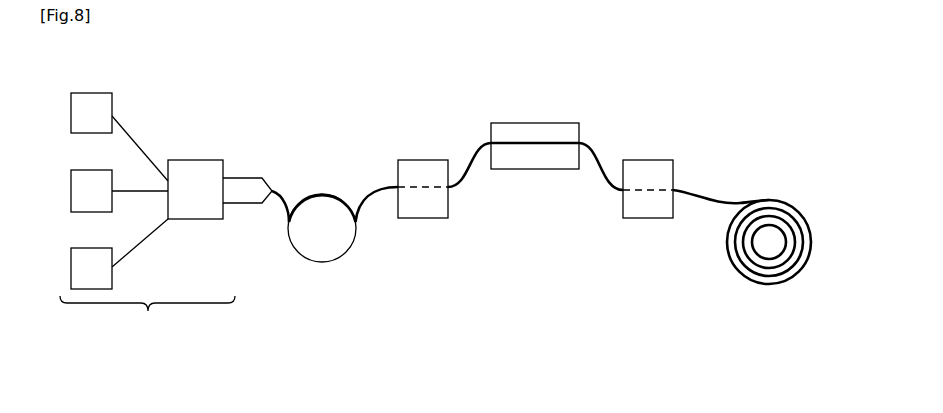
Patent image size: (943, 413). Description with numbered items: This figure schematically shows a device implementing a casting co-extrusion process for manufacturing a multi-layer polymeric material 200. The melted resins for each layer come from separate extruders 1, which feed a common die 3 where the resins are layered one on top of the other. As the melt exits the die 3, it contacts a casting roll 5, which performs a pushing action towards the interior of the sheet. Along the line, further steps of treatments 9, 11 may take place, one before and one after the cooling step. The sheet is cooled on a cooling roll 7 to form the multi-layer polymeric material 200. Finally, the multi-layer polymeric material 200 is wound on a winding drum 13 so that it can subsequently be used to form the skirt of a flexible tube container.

The extruders 1 is at (147, 217).
The die 3 is at (250, 190).
The casting roll 5 is at (325, 240).
The cooling roll 7 is at (533, 128).
The treatment 9 is at (412, 170).
The treatment 11 is at (644, 173).
The winding drum 13 is at (787, 201).
The multi-layer polymeric material 200 is at (700, 197).